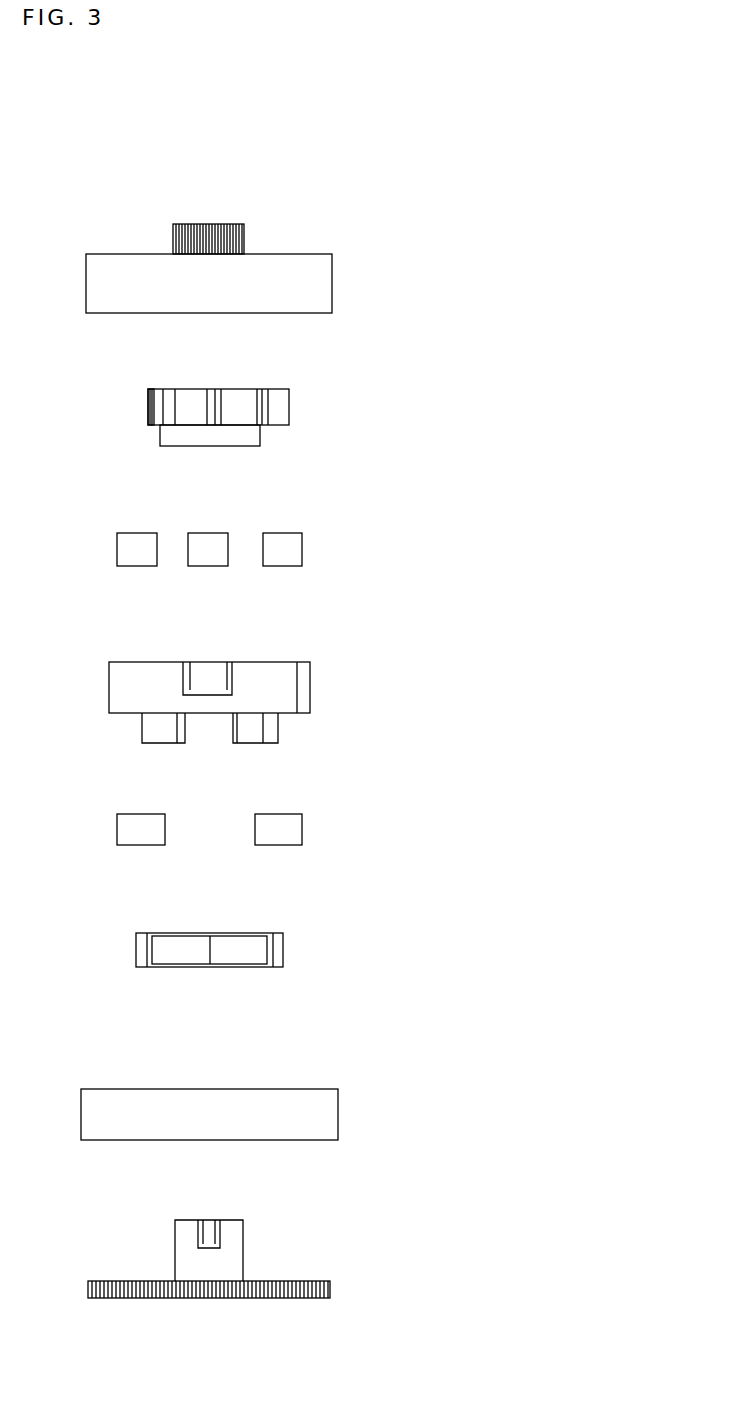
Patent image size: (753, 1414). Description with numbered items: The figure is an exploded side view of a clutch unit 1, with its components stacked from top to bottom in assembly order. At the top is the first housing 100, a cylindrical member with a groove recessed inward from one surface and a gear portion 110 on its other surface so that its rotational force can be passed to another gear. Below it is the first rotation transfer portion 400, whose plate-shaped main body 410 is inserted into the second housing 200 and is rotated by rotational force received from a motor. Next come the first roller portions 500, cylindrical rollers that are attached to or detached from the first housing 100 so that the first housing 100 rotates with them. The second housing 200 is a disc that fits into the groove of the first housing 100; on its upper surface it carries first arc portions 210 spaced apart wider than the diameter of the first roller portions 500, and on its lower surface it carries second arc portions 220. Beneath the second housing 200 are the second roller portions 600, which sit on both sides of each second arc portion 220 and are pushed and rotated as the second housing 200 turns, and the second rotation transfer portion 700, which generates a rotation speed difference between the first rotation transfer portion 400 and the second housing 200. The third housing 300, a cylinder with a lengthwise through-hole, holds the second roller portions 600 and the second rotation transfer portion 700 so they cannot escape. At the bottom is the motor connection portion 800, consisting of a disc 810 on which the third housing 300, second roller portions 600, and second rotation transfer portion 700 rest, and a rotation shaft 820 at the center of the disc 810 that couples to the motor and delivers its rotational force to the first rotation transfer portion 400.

The clutch unit 1 is at (435, 158).
The first housing 100 is at (312, 286).
The gear portion 110 is at (244, 240).
The second housing 200 is at (243, 676).
The first arc portion 210 is at (135, 683).
The second arc portion 220 is at (155, 730).
The third housing 300 is at (318, 1115).
The first rotation transfer portion 400 is at (256, 391).
The main body 410 is at (160, 408).
The first roller portions 500 is at (295, 550).
The second roller portions 600 is at (295, 830).
The second rotation transfer portion 700 is at (328, 931).
The motor connection portion 800 is at (267, 1242).
The disc 810 is at (330, 1290).
The rotation shaft 820 is at (225, 1262).